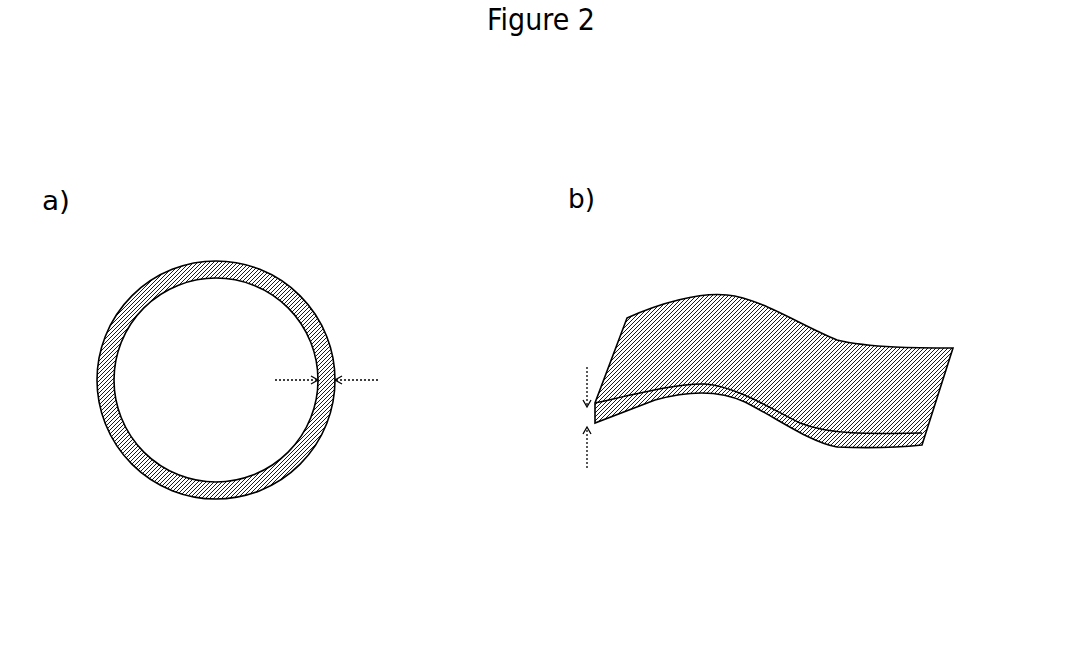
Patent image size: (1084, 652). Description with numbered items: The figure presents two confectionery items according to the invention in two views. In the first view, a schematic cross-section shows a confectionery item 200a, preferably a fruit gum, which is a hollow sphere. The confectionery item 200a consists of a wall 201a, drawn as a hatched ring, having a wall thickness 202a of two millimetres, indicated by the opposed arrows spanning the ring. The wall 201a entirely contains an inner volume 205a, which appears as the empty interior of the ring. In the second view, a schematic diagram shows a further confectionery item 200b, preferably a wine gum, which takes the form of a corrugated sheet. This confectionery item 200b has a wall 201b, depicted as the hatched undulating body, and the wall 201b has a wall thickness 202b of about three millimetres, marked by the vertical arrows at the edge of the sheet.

The confectionery item 200a is at (260, 123).
The wall 201a is at (258, 262).
The wall thickness 202a is at (330, 407).
The inner volume 205a is at (203, 447).
The confectionery item 200b is at (765, 123).
The wall 201b is at (883, 345).
The wall thickness 202b is at (582, 420).